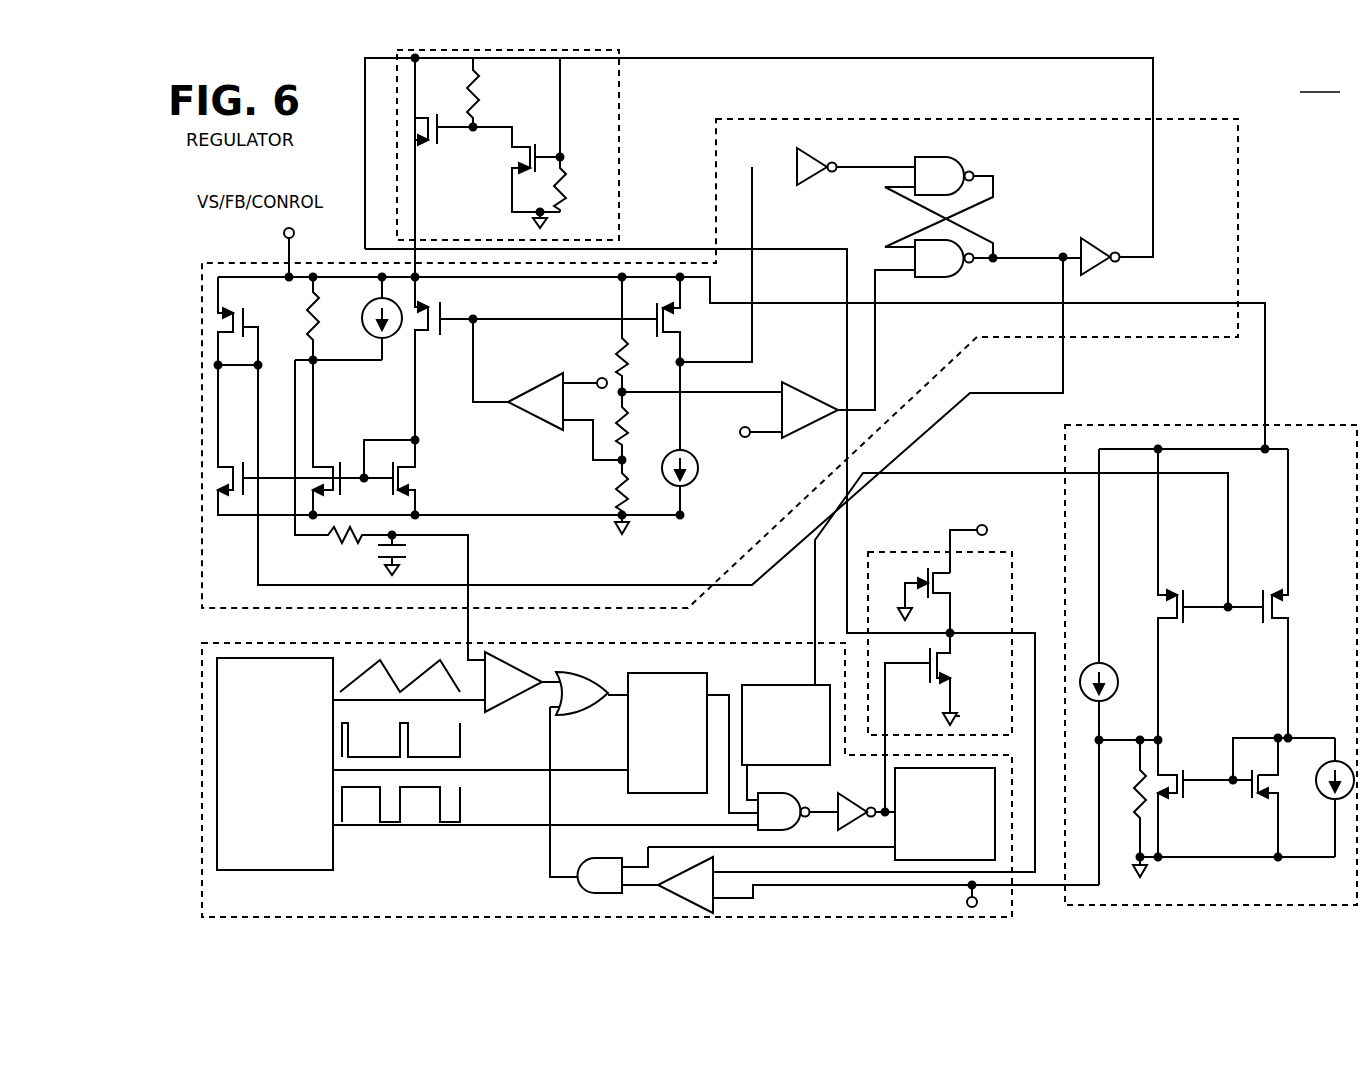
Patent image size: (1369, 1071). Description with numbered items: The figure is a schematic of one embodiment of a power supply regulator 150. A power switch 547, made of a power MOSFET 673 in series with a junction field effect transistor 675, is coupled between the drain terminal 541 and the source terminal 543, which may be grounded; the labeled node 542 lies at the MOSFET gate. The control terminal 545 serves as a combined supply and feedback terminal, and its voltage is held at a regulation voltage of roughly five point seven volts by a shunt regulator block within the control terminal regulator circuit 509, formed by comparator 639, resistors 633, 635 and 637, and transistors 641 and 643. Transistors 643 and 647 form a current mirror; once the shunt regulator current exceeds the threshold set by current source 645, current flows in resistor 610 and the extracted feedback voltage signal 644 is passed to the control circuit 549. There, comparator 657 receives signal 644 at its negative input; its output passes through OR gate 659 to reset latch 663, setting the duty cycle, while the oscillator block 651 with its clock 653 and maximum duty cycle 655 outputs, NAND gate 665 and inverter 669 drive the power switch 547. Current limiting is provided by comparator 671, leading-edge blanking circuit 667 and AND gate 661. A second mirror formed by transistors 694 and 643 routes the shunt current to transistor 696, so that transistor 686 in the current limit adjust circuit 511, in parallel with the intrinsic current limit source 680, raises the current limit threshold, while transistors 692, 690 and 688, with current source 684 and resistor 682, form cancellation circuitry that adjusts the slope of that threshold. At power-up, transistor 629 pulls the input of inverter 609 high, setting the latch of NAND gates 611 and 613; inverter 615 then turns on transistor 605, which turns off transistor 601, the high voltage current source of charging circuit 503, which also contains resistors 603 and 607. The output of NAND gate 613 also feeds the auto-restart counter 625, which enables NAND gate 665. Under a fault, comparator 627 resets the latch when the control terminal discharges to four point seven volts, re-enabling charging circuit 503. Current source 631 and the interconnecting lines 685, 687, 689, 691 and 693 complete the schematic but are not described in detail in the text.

The power supply regulator 150 is at (1320, 81).
The charging circuit 503 is at (532, 145).
The control terminal regulator circuit 509 is at (720, 350).
The current limit adjust circuit 511 is at (1211, 648).
The drain terminal 541 is at (988, 535).
The gate node of transistor 673 542 is at (907, 727).
The source terminal 543 is at (979, 720).
The control terminal 545 is at (743, 338).
The power switch 547 is at (940, 631).
The control circuit 549 is at (607, 767).
The transistor 601 is at (444, 167).
The resistor 603 is at (493, 94).
The transistor 605 is at (518, 172).
The resistor 607 is at (581, 135).
The inverter 609 is at (856, 177).
The resistor 610 is at (332, 318).
The NAND gate 611 is at (939, 189).
The NAND gate 613 is at (983, 244).
The inverter 615 is at (1108, 267).
The auto-restart counter 625 is at (786, 730).
The comparator 627 is at (823, 366).
The transistor 629 is at (704, 266).
The current source 631 is at (696, 440).
The resistor 633 is at (699, 336).
The resistor 635 is at (641, 428).
The resistor 637 is at (640, 497).
The comparator 639 is at (547, 389).
The transistor 641 is at (536, 358).
The transistor 643 is at (412, 476).
The extracted feedback voltage signal 644 is at (468, 640).
The current source 645 is at (338, 320).
The transistor 647 is at (340, 437).
The oscillator 651 is at (262, 708).
The clock signal 653 is at (307, 747).
The maximum duty cycle signal 655 is at (311, 811).
The comparator 657 is at (437, 700).
The OR gate 659 is at (575, 763).
The AND gate 661 is at (618, 882).
The latch 663 is at (545, 731).
The NAND gate 665 is at (793, 823).
The leading-edge blanking circuit 667 is at (962, 855).
The inverter 669 is at (866, 804).
The comparator 671 is at (873, 887).
The power MOSFET 673 is at (967, 679).
The junction field effect transistor 675 is at (951, 600).
The current source 680 is at (1184, 666).
The resistor 682 is at (1217, 807).
The current source 684 is at (1327, 797).
The signal line 685 is at (1153, 85).
The transistor 686 is at (1175, 594).
The signal line 687 is at (963, 473).
The transistor 688 is at (1205, 798).
The current limit signal line 689 is at (984, 899).
The transistor 690 is at (1284, 798).
The signal line 691 is at (1065, 380).
The transistor 692 is at (1282, 595).
The supply line 693 is at (679, 464).
The transistor 694 is at (448, 442).
The transistor 696 is at (252, 363).